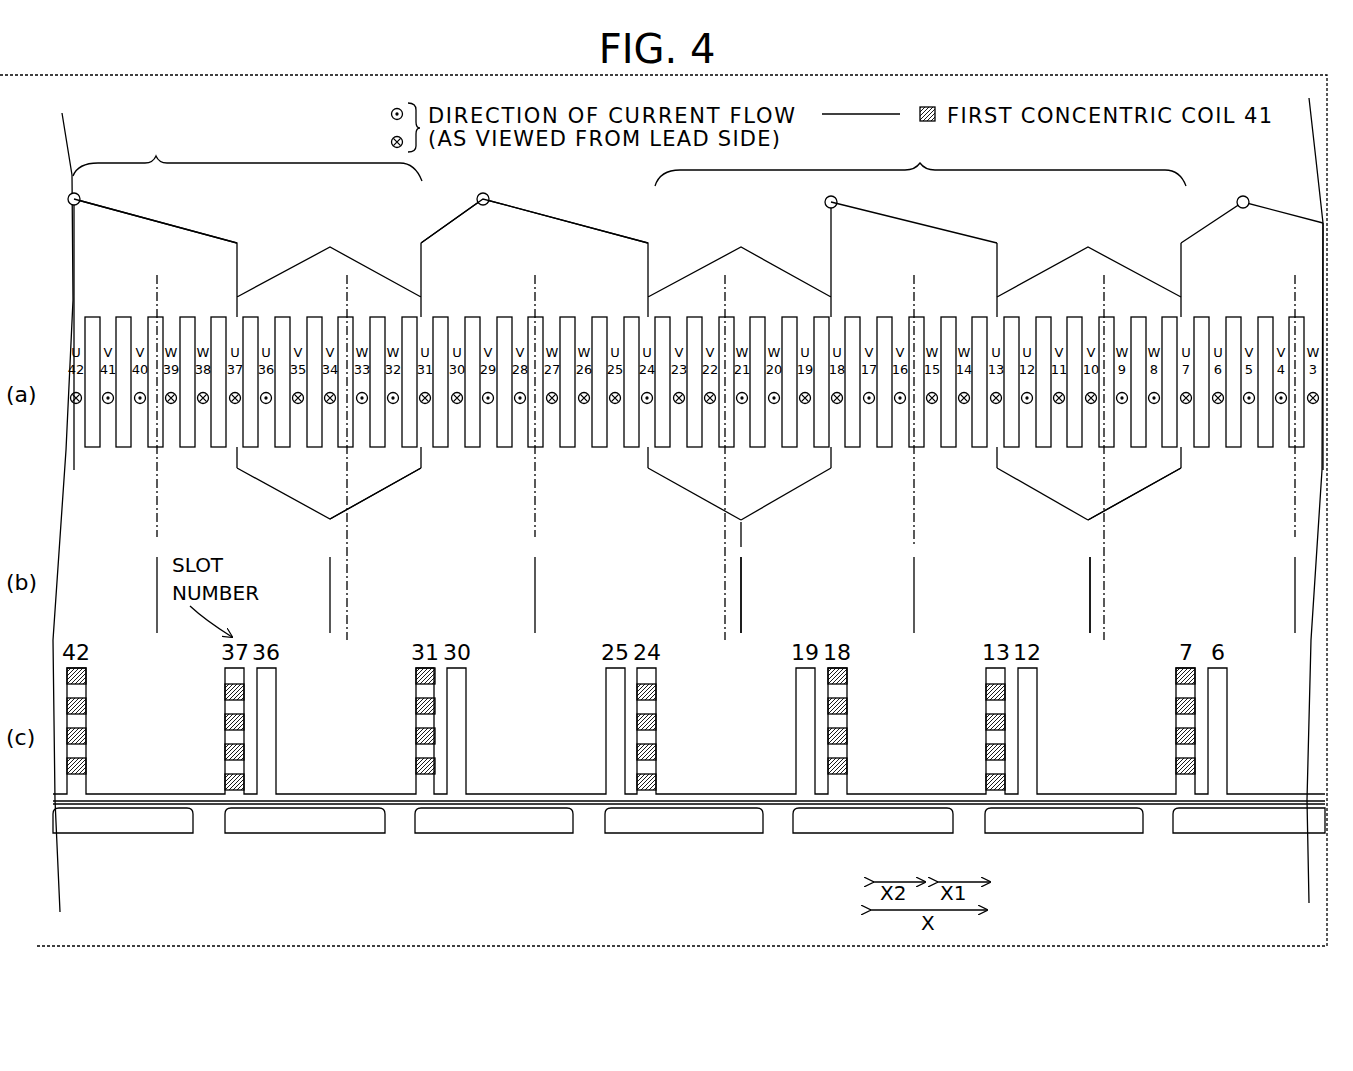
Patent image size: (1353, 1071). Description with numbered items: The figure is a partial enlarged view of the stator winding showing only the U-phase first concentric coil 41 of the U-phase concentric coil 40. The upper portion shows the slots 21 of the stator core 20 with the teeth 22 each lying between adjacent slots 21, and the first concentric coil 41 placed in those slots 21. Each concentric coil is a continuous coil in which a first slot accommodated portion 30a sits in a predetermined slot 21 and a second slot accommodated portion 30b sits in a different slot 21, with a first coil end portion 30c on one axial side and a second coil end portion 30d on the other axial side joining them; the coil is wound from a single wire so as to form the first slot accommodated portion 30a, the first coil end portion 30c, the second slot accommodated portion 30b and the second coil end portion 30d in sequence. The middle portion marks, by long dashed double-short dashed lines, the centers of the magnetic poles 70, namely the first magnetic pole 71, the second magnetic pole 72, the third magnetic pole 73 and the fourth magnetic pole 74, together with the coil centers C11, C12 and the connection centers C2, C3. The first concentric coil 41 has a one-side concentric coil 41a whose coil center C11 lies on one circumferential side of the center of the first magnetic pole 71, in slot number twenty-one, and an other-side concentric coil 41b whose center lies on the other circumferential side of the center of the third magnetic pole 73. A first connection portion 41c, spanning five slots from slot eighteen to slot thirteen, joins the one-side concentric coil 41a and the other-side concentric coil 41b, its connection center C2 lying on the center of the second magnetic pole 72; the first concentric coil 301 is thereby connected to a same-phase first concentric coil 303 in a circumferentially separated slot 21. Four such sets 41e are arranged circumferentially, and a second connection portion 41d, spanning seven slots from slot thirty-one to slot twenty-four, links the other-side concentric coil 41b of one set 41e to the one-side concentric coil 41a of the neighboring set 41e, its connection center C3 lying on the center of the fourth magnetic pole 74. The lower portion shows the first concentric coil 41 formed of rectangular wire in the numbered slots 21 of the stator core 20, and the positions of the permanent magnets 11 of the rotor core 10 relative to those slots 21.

The rotor core 10 is at (393, 829).
The permanent magnet 11 is at (517, 822).
The stator core 20 is at (195, 778).
The slot 21 is at (453, 443).
The tooth 22 is at (253, 786).
The first slot accommodated portion 30a is at (1180, 468).
The second slot accommodated portion 30b is at (996, 450).
The first coil end portion 30c is at (1065, 260).
The second coil end portion 30d is at (1062, 505).
The first concentric coil 301 is at (805, 483).
The first concentric coil 303 is at (1108, 525).
The U-phase concentric coil 40 is at (87, 737).
The first concentric coil 41 is at (1216, 186).
The one-side concentric coil 41a is at (775, 500).
The other-side concentric coil 41b is at (380, 490).
The first connection portion 41c is at (187, 227).
The second connection portion 41d is at (590, 228).
The set 41e is at (629, 157).
The magnetic pole 70 is at (155, 283).
The first magnetic pole 71 is at (725, 298).
The second magnetic pole 72 is at (953, 401).
The third magnetic pole 73 is at (1104, 297).
The fourth magnetic pole 74 is at (535, 297).
The connection center C2 is at (914, 600).
The connection center C3 is at (535, 597).
The coil center C11 is at (742, 616).
The coil center C12 is at (1090, 612).